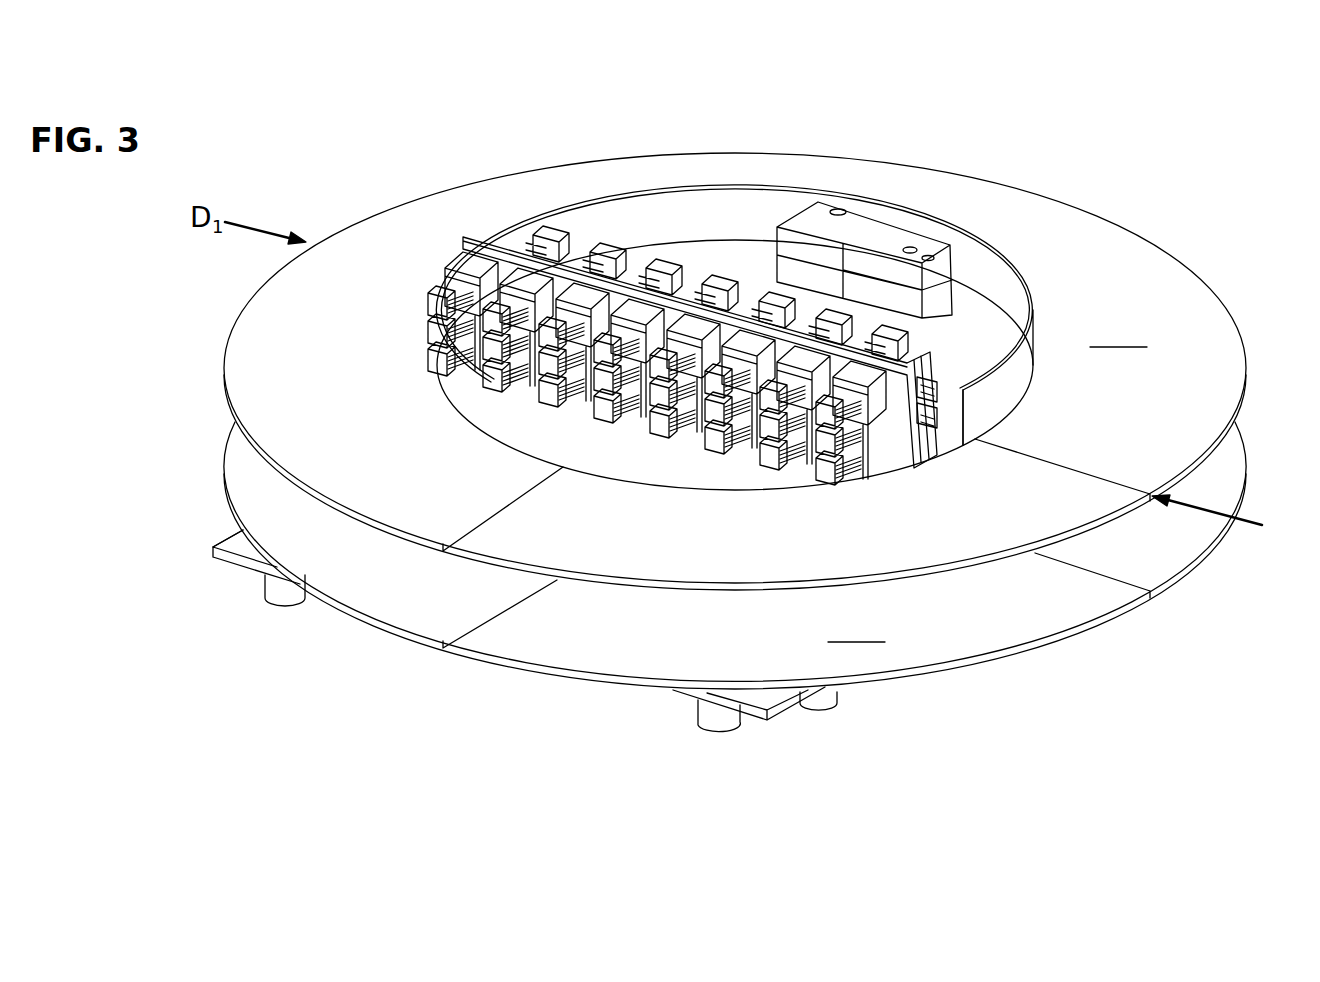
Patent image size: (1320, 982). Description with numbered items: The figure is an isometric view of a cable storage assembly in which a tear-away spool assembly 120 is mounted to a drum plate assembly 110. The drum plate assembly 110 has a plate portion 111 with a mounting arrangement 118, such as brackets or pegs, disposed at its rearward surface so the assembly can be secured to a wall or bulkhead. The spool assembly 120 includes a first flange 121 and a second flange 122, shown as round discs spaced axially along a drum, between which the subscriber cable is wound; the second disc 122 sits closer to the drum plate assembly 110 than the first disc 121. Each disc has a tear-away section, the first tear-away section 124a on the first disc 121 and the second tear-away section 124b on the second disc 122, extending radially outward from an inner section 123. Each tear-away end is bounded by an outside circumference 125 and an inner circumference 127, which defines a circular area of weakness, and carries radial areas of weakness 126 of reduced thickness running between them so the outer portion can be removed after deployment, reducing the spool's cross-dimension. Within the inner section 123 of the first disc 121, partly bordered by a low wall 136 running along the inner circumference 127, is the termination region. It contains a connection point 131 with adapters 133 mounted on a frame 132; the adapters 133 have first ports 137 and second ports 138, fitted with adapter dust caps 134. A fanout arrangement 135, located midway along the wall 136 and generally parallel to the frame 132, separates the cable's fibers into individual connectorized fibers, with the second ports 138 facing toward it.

The drum plate assembly 110 is at (485, 646).
The plate portion 111 is at (223, 535).
The mounting arrangement 118 is at (698, 717).
The tear-away spool assembly 120 is at (751, 364).
The first flange 121 is at (373, 186).
The second flange 122 is at (761, 565).
The inner section 123 is at (630, 458).
The first tear-away section 124a is at (1062, 410).
The second tear-away section 124b is at (664, 614).
The outside circumference 125 is at (1191, 277).
The radial area of weakness 126 is at (465, 528).
The inner circumference 127 is at (953, 438).
The connection point 131 is at (615, 386).
The frame 132 is at (455, 241).
The adapter 133 is at (458, 258).
The adapter dust cap 134 is at (437, 360).
The fanout arrangement 135 is at (850, 230).
The wall 136 is at (620, 220).
The first port 137 is at (572, 415).
The second port 138 is at (683, 266).